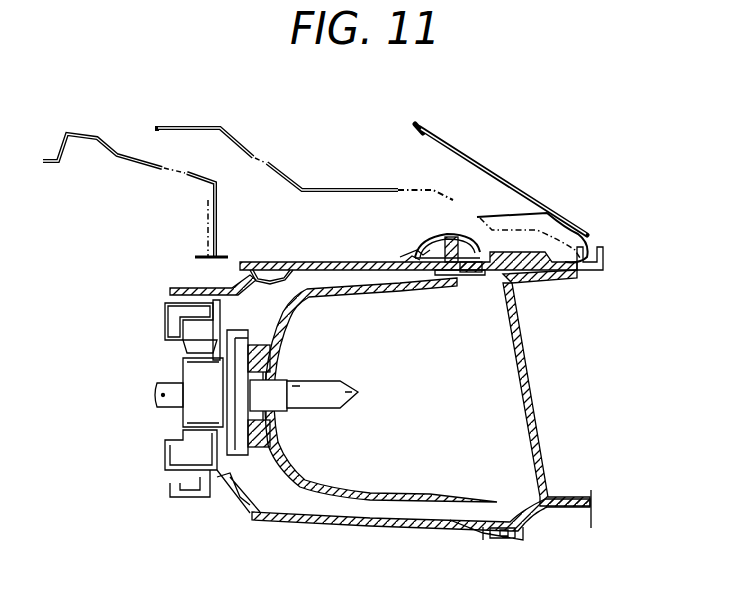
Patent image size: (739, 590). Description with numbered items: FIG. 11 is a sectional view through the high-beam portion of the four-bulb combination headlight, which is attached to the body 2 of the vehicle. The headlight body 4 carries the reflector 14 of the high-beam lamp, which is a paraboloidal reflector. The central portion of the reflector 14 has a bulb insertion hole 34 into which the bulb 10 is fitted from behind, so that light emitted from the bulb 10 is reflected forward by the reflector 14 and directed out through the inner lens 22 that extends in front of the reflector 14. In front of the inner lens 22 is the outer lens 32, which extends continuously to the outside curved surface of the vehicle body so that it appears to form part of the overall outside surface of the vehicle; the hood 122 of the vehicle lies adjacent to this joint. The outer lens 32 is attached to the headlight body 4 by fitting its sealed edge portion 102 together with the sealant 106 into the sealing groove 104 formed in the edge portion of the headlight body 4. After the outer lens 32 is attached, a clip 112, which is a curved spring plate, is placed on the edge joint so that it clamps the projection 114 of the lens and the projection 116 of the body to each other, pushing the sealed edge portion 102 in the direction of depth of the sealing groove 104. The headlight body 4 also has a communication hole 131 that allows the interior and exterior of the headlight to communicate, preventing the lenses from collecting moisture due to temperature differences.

The body of the vehicle 2 is at (150, 170).
The headlight body 4 is at (274, 262).
The bulb 10 is at (359, 390).
The reflector 14 is at (395, 287).
The inner lens 22 is at (537, 396).
The outer lens 32 is at (548, 230).
The bulb insertion hole 34 is at (272, 418).
The sealed edge portion 102 is at (446, 235).
The sealing groove 104 is at (466, 235).
The sealant 106 is at (470, 272).
The clip 112 is at (425, 250).
The projection of the lens 114 is at (500, 213).
The projection of the body 116 is at (422, 250).
The hood of the vehicle 122 is at (523, 200).
The communication hole 131 is at (162, 325).